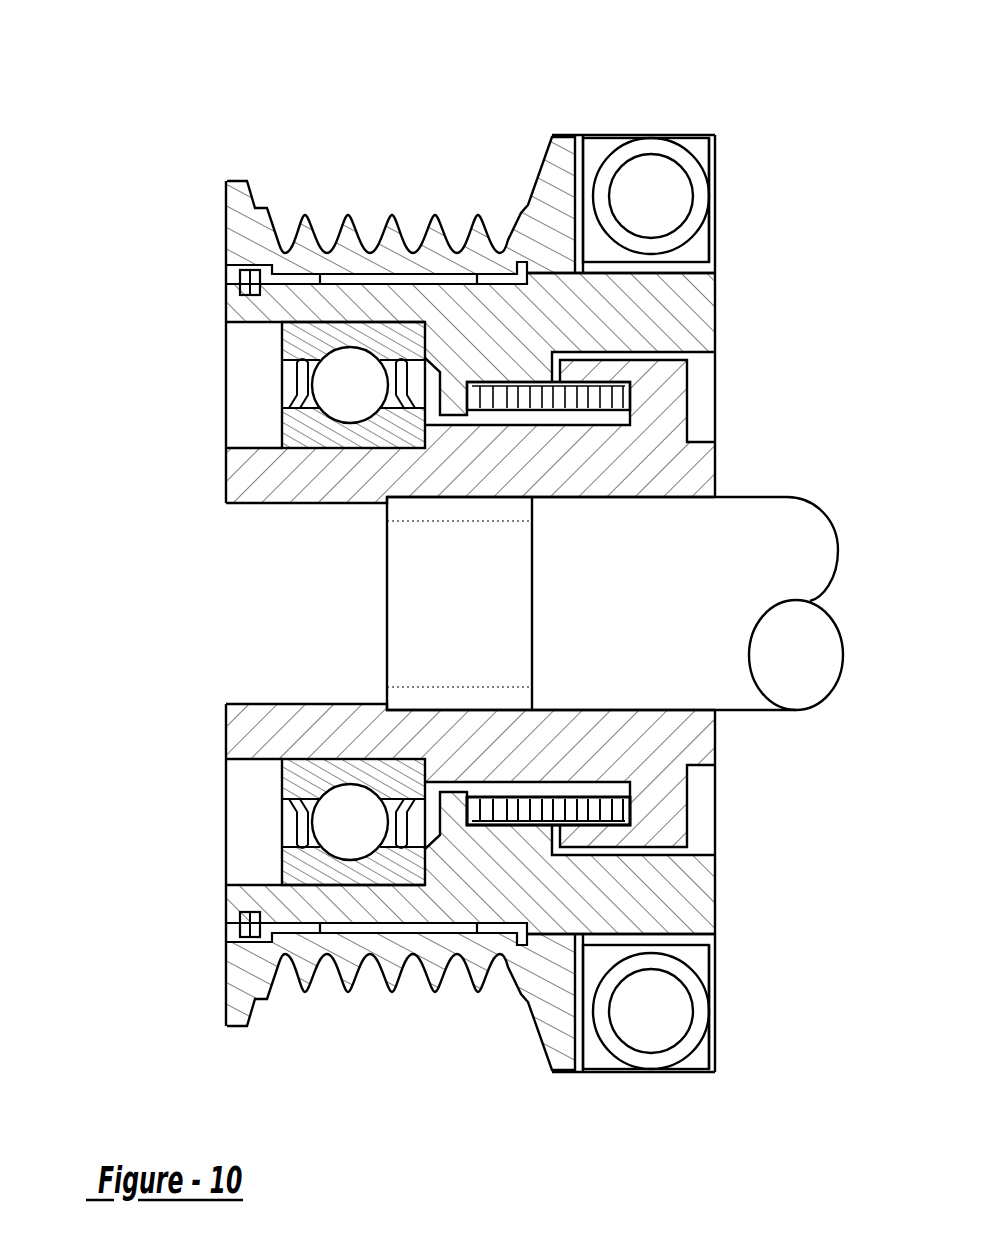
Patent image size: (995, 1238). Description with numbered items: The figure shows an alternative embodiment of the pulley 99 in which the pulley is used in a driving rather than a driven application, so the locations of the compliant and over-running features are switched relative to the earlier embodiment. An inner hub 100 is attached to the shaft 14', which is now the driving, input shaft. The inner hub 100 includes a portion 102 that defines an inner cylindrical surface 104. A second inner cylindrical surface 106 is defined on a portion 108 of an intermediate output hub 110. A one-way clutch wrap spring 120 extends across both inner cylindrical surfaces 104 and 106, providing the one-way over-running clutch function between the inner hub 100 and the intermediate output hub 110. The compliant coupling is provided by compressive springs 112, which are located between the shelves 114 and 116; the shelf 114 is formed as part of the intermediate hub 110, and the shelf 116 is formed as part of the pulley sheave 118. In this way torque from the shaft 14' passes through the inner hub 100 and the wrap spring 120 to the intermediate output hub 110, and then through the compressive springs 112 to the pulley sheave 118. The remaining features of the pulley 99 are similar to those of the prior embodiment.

The pulley 99 is at (134, 148).
The shaft 14' is at (629, 555).
The inner hub 100 is at (683, 478).
The portion 102 is at (657, 368).
The inner cylindrical surface 104 is at (590, 827).
The second inner cylindrical surface 106 is at (507, 826).
The portion 108 is at (500, 362).
The intermediate output hub 110 is at (683, 305).
The compressive springs 112 is at (665, 147).
The shelf 114 is at (716, 230).
The shelf 116 is at (595, 145).
The pulley sheave 118 is at (521, 199).
The one-way clutch wrap spring 120 is at (537, 397).